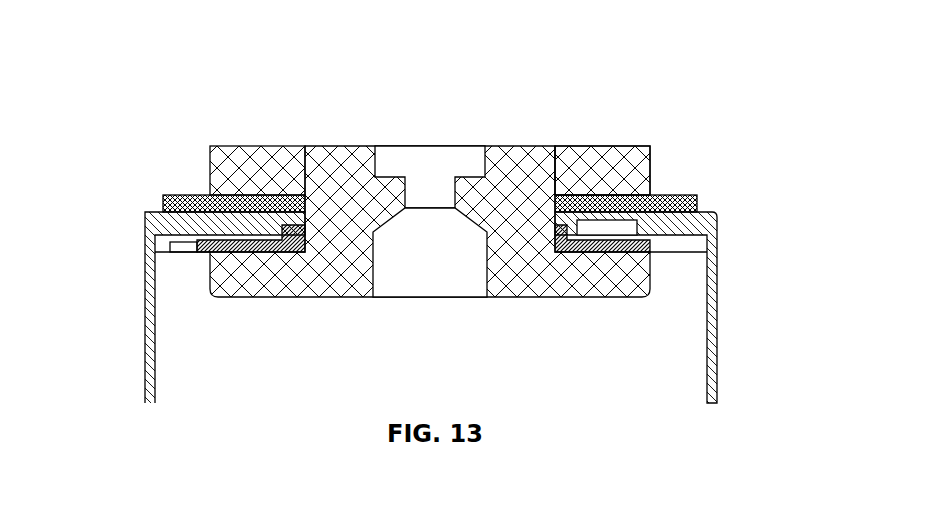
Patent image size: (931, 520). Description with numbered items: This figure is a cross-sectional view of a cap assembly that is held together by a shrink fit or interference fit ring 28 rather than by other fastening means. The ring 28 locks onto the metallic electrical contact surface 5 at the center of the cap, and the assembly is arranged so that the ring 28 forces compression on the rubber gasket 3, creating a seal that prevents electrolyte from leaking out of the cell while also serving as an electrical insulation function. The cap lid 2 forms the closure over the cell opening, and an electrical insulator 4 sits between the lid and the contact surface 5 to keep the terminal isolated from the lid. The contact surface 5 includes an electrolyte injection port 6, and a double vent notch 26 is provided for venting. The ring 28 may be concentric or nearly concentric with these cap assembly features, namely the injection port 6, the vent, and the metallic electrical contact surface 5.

The cap lid 2 is at (141, 214).
The rubber gasket 3 is at (652, 175).
The electrical insulator 4 is at (187, 194).
The metallic electrical contact surface 5 is at (515, 147).
The electrolyte injection port 6 is at (402, 268).
The double vent notch 26 is at (707, 238).
The shrink fit or press fit ring 28 is at (602, 147).